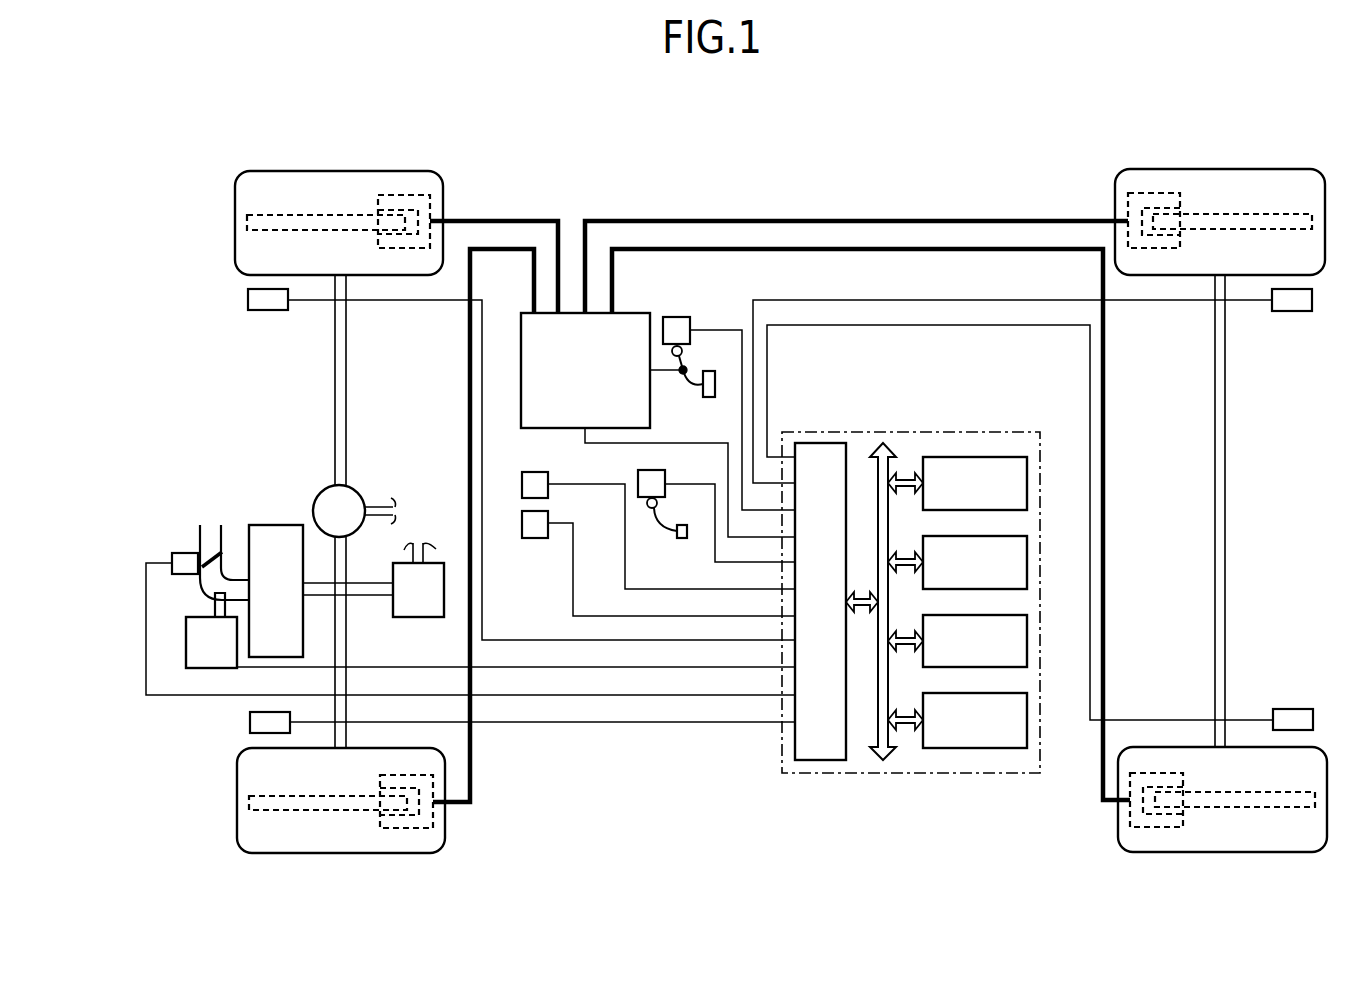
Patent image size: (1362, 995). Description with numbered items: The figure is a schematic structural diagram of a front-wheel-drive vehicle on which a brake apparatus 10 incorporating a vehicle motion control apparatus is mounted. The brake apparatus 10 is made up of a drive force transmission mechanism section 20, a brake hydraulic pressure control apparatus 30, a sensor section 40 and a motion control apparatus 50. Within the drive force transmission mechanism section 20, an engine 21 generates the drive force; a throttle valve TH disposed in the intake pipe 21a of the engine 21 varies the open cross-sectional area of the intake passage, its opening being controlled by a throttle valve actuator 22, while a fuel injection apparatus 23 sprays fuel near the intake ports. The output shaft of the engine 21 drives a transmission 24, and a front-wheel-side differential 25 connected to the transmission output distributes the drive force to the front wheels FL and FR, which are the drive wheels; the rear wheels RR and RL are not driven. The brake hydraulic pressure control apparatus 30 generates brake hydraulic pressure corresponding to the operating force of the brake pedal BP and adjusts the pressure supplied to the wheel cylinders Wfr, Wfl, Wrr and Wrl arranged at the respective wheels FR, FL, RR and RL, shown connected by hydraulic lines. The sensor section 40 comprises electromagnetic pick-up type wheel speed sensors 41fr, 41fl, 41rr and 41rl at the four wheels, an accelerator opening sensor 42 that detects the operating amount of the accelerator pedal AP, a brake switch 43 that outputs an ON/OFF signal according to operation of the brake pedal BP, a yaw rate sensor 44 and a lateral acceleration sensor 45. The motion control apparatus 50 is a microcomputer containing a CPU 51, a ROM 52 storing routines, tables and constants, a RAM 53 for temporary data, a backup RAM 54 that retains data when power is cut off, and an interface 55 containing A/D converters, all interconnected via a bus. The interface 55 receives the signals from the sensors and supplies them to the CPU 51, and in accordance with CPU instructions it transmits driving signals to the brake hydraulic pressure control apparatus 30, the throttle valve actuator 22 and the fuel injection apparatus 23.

The brake apparatus 10 is at (818, 197).
The drive force transmission mechanism section 20 is at (196, 470).
The engine 21 is at (277, 525).
The intake pipe 21a is at (200, 538).
The throttle valve TH is at (209, 542).
The throttle valve actuator 22 is at (178, 578).
The fuel injection apparatus 23 is at (183, 644).
The transmission 24 is at (421, 620).
The front-wheel-side differential 25 is at (354, 488).
The brake hydraulic pressure control apparatus 30 is at (650, 415).
The sensor section 40 is at (559, 549).
The wheel speed sensor 41fr is at (267, 312).
The wheel speed sensor 41fl is at (250, 722).
The wheel speed sensor 41rr is at (1293, 311).
The wheel speed sensor 41rl is at (1300, 707).
The accelerator opening sensor 42 is at (652, 470).
The accelerator pedal AP is at (660, 517).
The brake switch 43 is at (677, 317).
The brake pedal BP is at (690, 370).
The yaw rate sensor 44 is at (538, 471).
The lateral acceleration sensor 45 is at (548, 521).
The motion control apparatus 50 is at (950, 776).
The CPU 51 is at (1027, 483).
The ROM 52 is at (1027, 562).
The RAM 53 is at (1027, 641).
The backup RAM 54 is at (1027, 720).
The interface 55 is at (820, 761).
The front right wheel FR is at (292, 171).
The front left wheel FL is at (413, 748).
The rear right wheel RR is at (1240, 169).
The rear left wheel RL is at (1242, 852).
The wheel cylinder Wfr is at (393, 193).
The wheel cylinder Wfl is at (435, 815).
The wheel cylinder Wrr is at (1150, 193).
The wheel cylinder Wrl is at (1145, 827).